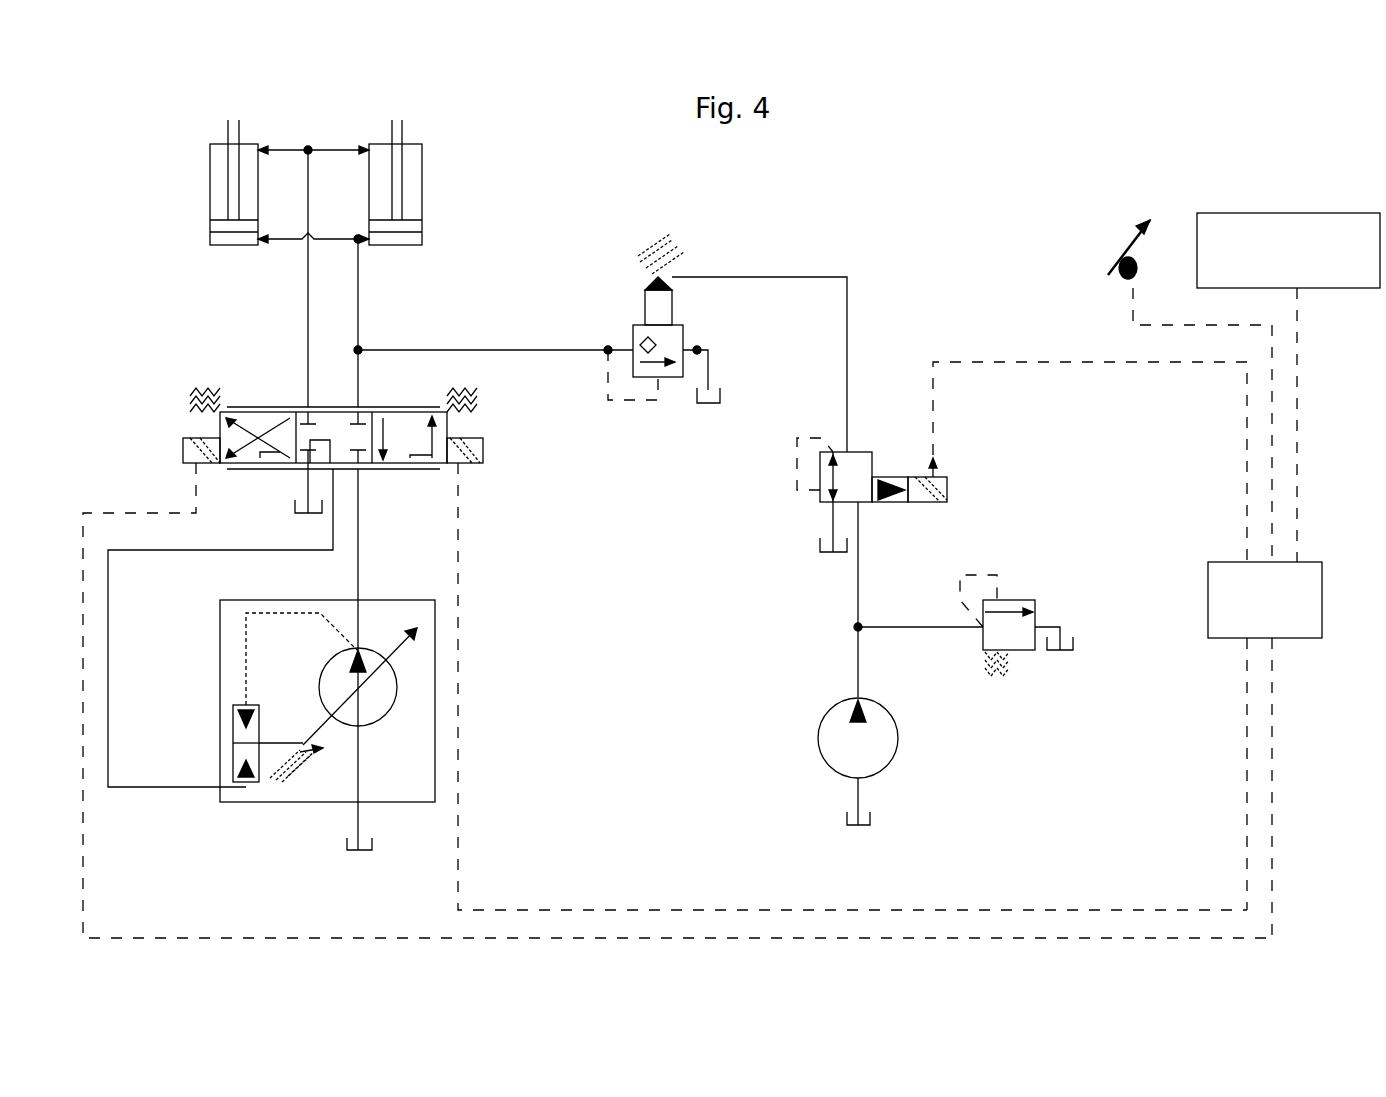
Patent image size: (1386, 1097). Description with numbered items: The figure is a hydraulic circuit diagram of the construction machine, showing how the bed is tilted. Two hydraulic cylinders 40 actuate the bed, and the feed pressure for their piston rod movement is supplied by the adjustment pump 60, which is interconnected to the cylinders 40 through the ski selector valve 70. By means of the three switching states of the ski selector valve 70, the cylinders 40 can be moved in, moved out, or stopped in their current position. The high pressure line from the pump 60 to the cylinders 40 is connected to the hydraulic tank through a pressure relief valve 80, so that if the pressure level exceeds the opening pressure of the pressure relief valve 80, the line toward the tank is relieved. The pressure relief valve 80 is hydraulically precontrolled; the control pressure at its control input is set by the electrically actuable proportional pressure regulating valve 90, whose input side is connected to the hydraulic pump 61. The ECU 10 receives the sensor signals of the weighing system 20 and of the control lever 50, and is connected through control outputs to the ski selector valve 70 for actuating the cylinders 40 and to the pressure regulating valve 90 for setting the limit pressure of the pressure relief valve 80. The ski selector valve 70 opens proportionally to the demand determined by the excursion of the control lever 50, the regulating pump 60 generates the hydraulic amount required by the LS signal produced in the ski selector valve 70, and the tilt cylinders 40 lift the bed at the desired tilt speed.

The ECU 10 is at (1225, 562).
The weighing system 20 is at (1275, 207).
The hydraulic cylinders 40 is at (210, 178).
The control lever 50 is at (1123, 242).
The adjustment pump 60 is at (435, 733).
The hydraulic pump 61 is at (897, 753).
The ski selector valve 70 is at (258, 407).
The pressure relief valve 80 is at (645, 277).
The proportional pressure regulating valve 90 is at (823, 510).